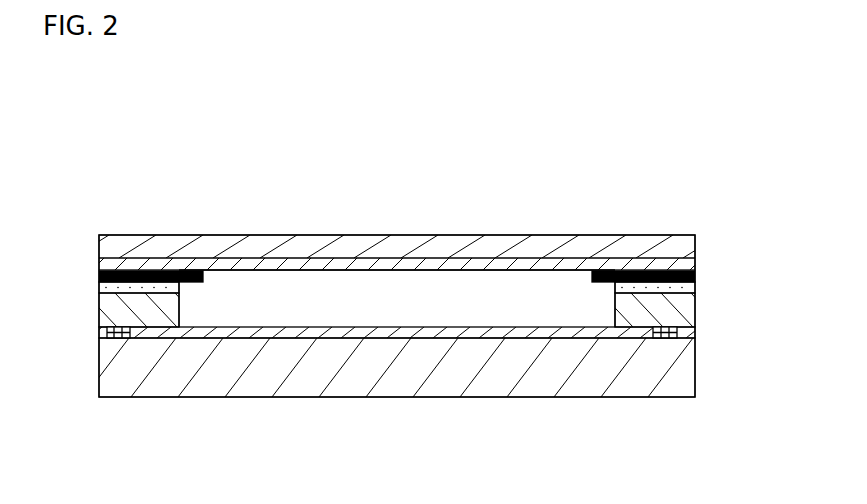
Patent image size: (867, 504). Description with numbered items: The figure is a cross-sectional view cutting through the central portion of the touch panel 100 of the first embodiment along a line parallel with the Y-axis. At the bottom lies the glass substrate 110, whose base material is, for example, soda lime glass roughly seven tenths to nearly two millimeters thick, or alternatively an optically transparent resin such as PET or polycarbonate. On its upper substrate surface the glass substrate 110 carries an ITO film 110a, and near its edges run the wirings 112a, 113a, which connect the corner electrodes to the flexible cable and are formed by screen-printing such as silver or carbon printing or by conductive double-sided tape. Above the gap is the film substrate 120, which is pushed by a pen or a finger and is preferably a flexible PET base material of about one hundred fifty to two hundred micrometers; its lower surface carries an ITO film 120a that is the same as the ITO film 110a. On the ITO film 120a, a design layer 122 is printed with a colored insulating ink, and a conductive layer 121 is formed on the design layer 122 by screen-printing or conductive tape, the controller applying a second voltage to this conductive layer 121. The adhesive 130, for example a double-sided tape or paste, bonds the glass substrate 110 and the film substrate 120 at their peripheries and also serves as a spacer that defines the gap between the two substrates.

The touch panel 100 is at (140, 146).
The glass substrate 110 is at (400, 397).
The ITO film 110a is at (447, 327).
The wiring 112a is at (110, 338).
The wiring 113a is at (675, 337).
The film substrate 120 is at (397, 235).
The ITO film 120a is at (377, 270).
The conductive layer 121 is at (697, 284).
The design layer 122 is at (593, 282).
The adhesive 130 is at (110, 310).